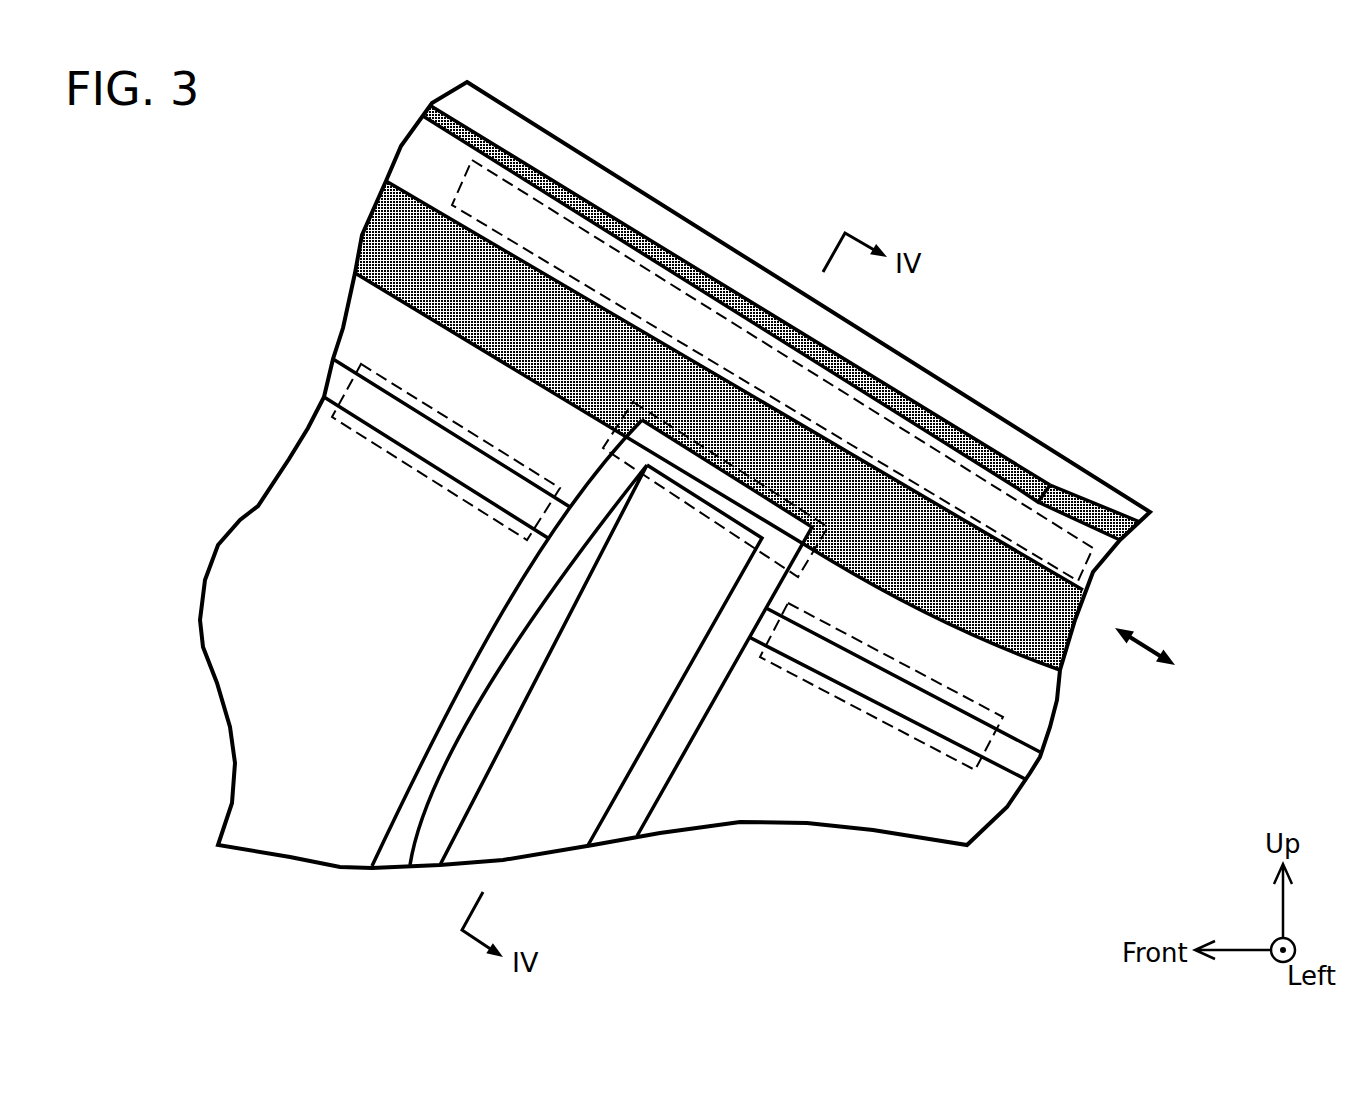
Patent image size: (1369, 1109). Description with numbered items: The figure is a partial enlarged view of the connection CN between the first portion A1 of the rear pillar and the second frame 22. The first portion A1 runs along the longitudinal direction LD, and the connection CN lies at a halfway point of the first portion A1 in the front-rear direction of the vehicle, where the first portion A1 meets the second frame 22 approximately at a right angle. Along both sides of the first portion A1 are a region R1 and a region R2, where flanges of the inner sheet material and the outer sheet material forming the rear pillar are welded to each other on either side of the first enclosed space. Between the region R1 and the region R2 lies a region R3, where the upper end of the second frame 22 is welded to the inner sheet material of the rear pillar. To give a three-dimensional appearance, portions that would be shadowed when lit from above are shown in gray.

The second frame 22 is at (608, 743).
The connection CN is at (655, 400).
The first portion A1 is at (705, 415).
The region R1 is at (372, 437).
The region R2 is at (1013, 493).
The region R3 is at (795, 503).
The longitudinal direction LD is at (1147, 637).